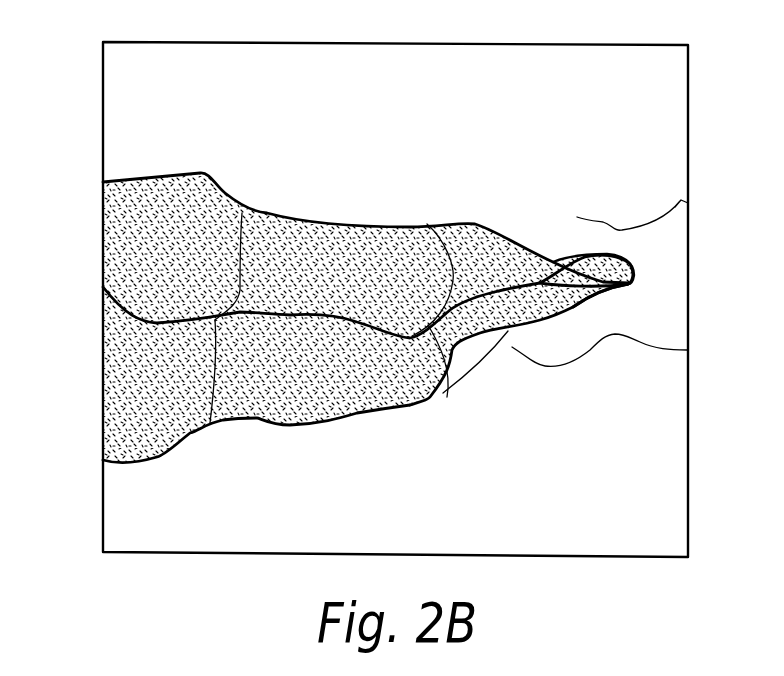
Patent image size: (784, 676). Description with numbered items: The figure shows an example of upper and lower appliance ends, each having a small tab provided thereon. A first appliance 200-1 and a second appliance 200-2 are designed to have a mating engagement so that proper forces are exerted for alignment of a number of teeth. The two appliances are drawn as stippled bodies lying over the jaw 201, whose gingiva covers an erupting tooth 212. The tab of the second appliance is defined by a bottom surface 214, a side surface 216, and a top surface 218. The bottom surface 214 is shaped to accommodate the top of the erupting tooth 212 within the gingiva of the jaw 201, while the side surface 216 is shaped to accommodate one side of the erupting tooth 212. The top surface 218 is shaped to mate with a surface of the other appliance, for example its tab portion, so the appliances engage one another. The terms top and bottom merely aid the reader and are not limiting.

The jaw 201 is at (113, 506).
The first appliance 200-1 is at (127, 364).
The second appliance 200-2 is at (127, 234).
The erupting tooth 212 is at (627, 340).
The bottom surface 214 is at (585, 318).
The side surface 216 is at (507, 327).
The top surface 218 is at (568, 264).